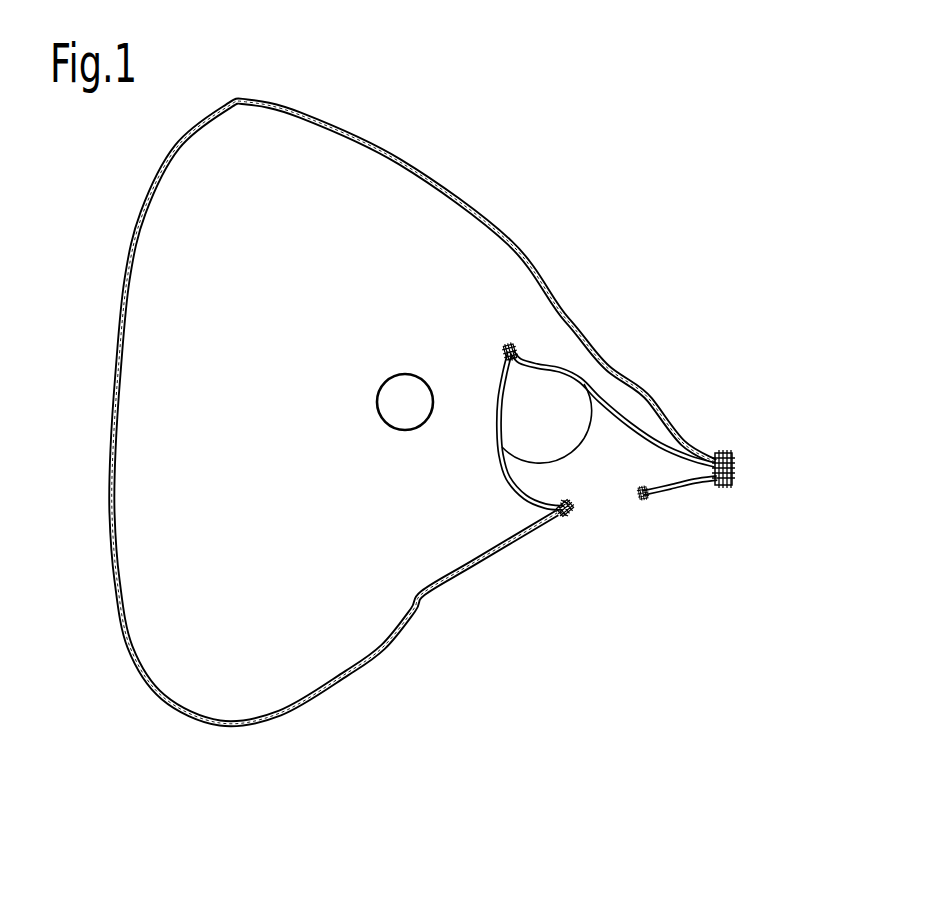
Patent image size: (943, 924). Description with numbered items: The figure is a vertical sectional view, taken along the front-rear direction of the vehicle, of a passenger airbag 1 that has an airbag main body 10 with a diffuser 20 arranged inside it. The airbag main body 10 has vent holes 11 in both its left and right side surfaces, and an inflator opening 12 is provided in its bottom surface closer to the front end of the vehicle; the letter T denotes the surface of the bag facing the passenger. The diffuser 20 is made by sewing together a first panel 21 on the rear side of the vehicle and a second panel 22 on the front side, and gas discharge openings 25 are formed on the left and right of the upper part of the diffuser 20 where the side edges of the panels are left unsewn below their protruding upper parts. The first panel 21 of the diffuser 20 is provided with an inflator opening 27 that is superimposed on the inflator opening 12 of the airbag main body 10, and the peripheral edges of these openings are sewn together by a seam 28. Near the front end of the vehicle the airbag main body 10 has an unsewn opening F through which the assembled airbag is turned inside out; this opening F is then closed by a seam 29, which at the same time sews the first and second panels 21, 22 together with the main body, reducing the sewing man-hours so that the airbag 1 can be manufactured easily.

The passenger airbag 1 is at (427, 397).
The airbag main body 10 is at (516, 239).
The vent hole 11 is at (384, 408).
The inflator opening 12 is at (578, 509).
The diffuser 20 is at (570, 415).
The first panel 21 is at (498, 412).
The second panel 22 is at (567, 367).
The gas discharge opening 25 is at (572, 424).
The inflator opening 27 is at (573, 504).
The seam 28 is at (566, 517).
The seam 29 is at (717, 490).
The unsewn opening F is at (740, 470).
The surface facing the passenger T is at (102, 352).